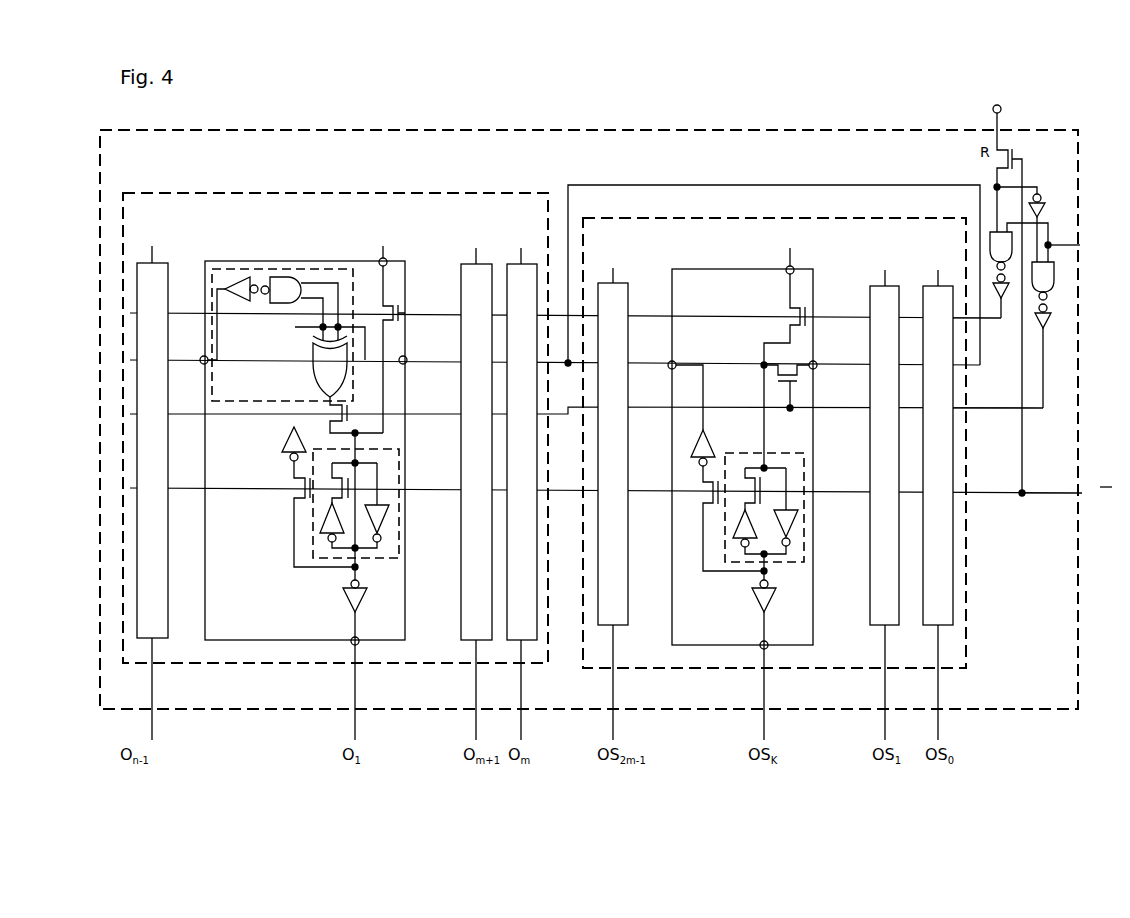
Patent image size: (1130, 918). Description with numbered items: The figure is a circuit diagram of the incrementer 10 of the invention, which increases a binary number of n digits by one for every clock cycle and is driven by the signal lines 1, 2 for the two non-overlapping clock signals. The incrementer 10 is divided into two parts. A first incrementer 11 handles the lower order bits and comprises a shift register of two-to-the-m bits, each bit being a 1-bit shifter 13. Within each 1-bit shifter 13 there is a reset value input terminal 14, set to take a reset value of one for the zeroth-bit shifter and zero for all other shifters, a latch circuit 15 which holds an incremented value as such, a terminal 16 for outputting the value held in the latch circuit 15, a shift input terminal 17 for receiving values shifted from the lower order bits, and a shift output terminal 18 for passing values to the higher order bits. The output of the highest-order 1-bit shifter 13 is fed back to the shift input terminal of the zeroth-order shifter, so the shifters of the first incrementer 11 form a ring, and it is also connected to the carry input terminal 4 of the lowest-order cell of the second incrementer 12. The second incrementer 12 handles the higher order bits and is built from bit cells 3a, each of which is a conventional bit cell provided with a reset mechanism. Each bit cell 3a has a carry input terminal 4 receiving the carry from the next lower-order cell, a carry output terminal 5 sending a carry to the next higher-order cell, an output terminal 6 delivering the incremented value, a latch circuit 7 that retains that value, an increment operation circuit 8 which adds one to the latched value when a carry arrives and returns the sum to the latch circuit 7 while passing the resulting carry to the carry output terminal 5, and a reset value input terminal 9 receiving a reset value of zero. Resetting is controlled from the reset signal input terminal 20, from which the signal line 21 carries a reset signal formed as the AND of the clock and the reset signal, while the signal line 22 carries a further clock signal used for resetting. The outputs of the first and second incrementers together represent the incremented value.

The signal line for clock φ 1 is at (1080, 245).
The signal line for clock φ-bar 2 is at (1082, 493).
The bit cell 3a is at (147, 262).
The carry input terminal 4 is at (406, 357).
The carry output terminal 5 is at (201, 357).
The output terminal 6 is at (360, 644).
The latch circuit 7 is at (375, 450).
The increment operation circuit 8 is at (355, 300).
The reset value input terminal 9 is at (388, 258).
The incrementer 10 is at (490, 130).
The first incrementer 11 is at (675, 218).
The second incrementer 12 is at (270, 193).
The 1-bit shifter 13 is at (618, 283).
The reset value input terminal 14 is at (796, 268).
The latch circuit 15 is at (805, 455).
The output terminal 16 is at (769, 648).
The shift input terminal 17 is at (817, 363).
The shift output terminal 18 is at (676, 363).
The reset signal input terminal 20 is at (1002, 107).
The reset signal line Rφ 21 is at (985, 320).
The clock signal line φNR 22 is at (1033, 410).